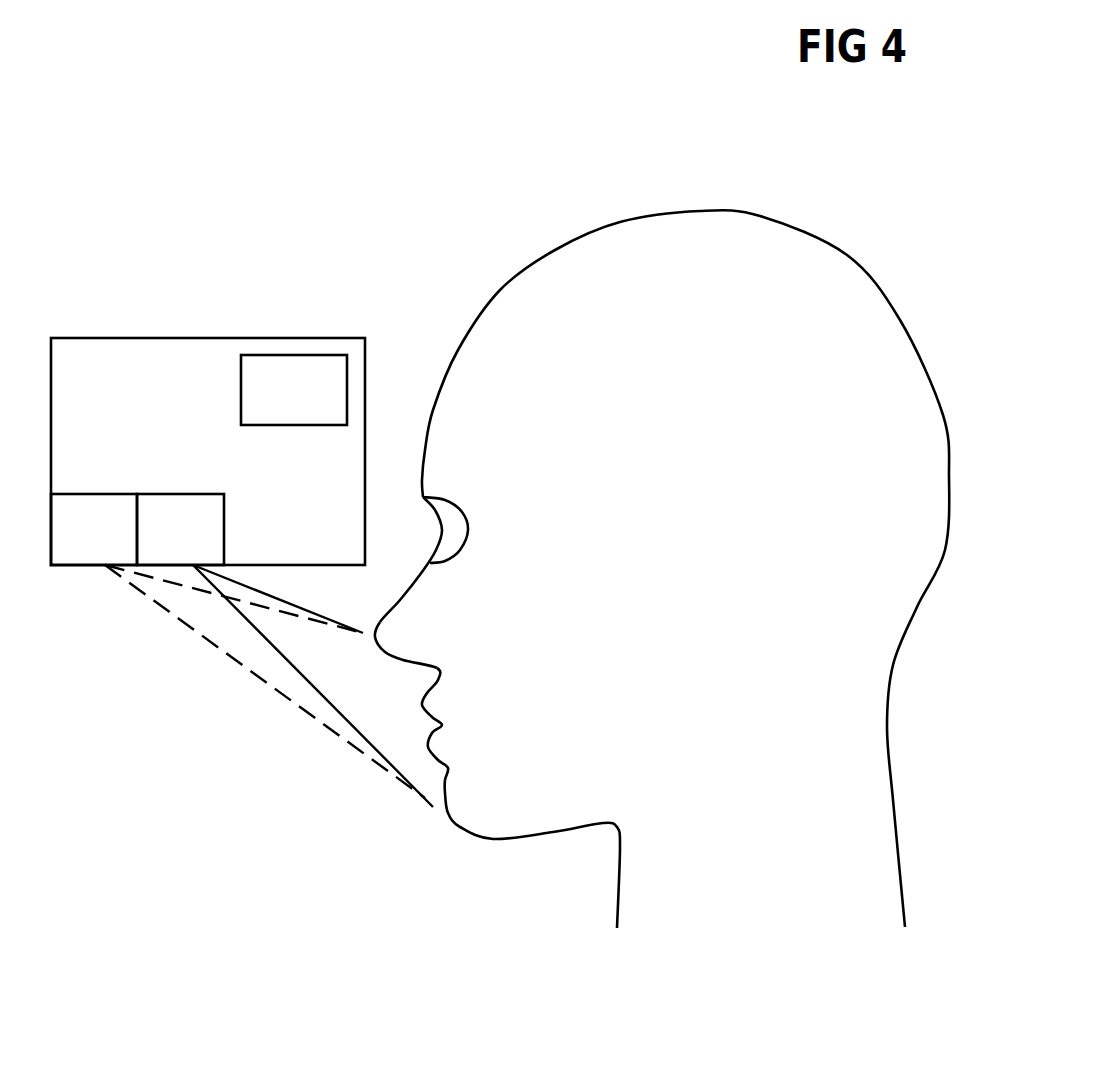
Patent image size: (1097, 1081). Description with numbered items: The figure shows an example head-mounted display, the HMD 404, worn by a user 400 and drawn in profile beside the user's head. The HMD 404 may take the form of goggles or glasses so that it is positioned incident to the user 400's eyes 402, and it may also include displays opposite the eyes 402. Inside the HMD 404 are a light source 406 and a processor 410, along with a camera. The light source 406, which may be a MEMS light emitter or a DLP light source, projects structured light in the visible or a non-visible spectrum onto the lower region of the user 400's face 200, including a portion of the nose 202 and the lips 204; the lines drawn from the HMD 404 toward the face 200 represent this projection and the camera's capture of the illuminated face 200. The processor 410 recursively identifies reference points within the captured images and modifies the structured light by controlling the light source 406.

The face 200 is at (426, 808).
The nose 202 is at (408, 658).
The lips 204 is at (443, 688).
The user 400 is at (850, 257).
The eyes 402 is at (468, 532).
The head-mounted display (HMD) 404 is at (98, 399).
The light source 406 is at (196, 554).
The processor 410 is at (73, 554).